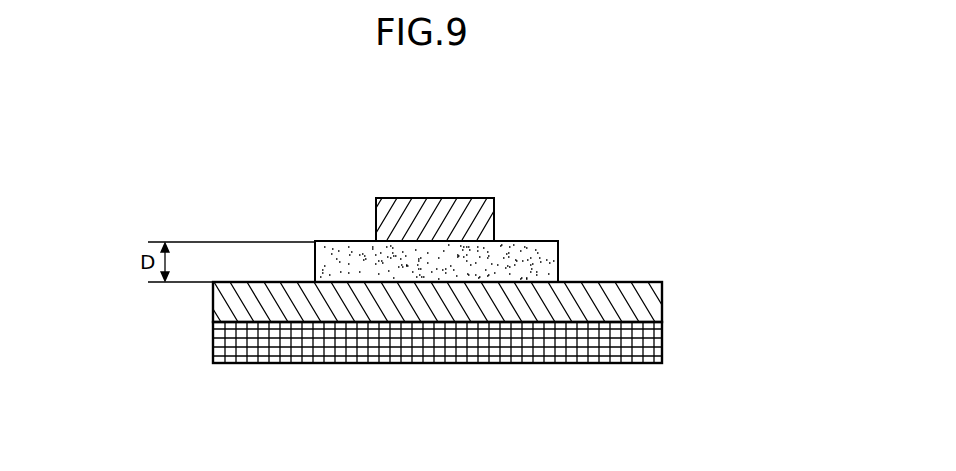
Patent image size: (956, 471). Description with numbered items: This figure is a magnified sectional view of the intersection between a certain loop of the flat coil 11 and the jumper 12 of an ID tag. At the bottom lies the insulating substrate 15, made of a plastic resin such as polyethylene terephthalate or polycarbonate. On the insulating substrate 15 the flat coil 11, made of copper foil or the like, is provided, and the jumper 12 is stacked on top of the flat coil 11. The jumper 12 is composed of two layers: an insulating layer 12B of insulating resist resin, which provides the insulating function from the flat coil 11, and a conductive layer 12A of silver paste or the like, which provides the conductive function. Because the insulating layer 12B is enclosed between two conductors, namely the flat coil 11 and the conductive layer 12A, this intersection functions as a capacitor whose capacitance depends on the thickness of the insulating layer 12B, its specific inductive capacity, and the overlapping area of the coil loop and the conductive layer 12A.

The flat coil 11 is at (213, 300).
The jumper 12 is at (718, 168).
The conductive layer 12A is at (455, 198).
The insulating layer 12B is at (560, 263).
The insulating substrate 15 is at (627, 363).